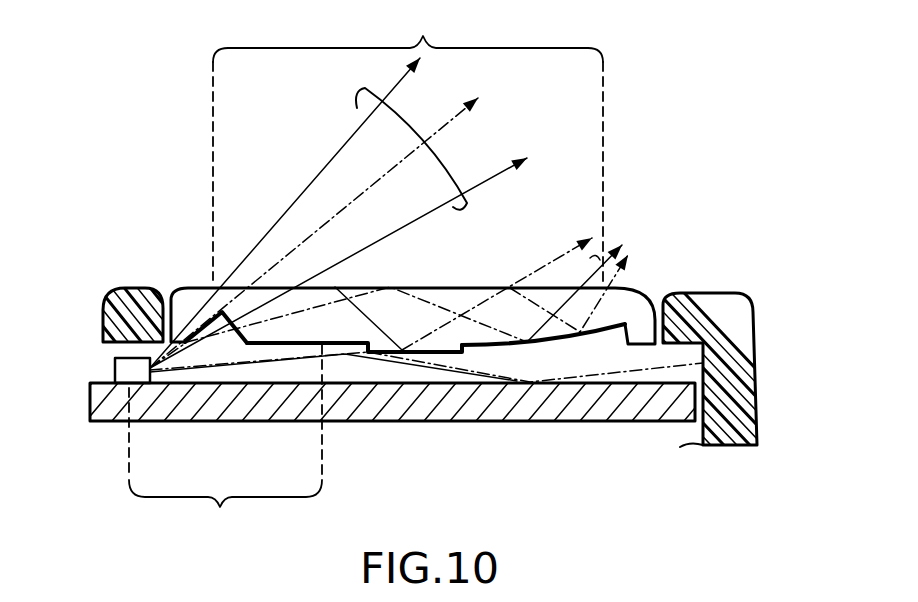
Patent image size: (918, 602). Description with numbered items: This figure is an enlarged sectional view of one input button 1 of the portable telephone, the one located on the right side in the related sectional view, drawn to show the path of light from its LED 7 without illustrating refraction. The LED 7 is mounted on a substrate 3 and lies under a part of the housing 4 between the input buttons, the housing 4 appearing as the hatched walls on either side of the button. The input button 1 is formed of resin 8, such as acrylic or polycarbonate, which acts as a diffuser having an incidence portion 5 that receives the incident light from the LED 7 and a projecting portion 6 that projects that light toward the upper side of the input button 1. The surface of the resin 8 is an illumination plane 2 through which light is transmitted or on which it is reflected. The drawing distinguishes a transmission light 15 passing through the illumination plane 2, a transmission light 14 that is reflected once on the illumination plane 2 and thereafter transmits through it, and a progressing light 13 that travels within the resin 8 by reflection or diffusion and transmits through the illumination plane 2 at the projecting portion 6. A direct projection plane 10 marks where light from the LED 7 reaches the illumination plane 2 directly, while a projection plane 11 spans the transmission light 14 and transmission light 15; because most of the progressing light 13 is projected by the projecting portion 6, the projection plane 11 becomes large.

The input button 1 is at (407, 340).
The illumination plane 2 is at (431, 287).
The substrate 3 is at (455, 412).
The housing 4 is at (118, 292).
The incidence portion 5 is at (224, 333).
The projecting portion 6 is at (600, 338).
The LED 7 is at (117, 372).
The resin 8 is at (346, 330).
The direct projection plane 10 is at (225, 439).
The projection plane 11 is at (408, 145).
The progressing light 13 is at (602, 270).
The transmission light 14 is at (545, 262).
The transmission light 15 is at (454, 162).